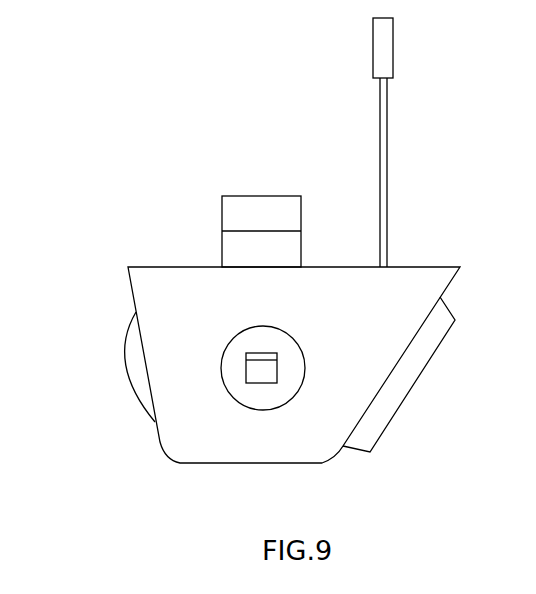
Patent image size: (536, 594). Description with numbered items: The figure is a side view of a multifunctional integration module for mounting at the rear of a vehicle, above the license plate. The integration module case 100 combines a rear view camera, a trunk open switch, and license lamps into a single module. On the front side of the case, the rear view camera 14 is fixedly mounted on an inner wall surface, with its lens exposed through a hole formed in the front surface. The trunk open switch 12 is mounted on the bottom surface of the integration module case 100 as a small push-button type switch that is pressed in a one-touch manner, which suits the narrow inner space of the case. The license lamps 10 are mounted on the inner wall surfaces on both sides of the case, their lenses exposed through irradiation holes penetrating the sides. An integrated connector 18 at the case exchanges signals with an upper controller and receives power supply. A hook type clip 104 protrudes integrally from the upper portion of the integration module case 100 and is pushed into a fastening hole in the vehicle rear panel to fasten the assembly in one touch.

The integration module case 100 is at (131, 253).
The license lamps 10 is at (242, 407).
The trunk open switch 12 is at (405, 378).
The rear view camera 14 is at (135, 365).
The integrated connector 18 is at (390, 47).
The hook type clip 104 is at (253, 210).